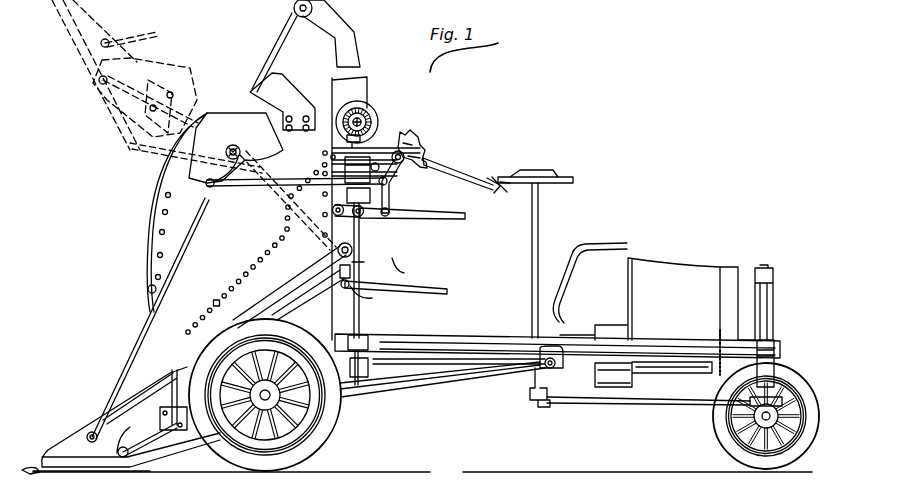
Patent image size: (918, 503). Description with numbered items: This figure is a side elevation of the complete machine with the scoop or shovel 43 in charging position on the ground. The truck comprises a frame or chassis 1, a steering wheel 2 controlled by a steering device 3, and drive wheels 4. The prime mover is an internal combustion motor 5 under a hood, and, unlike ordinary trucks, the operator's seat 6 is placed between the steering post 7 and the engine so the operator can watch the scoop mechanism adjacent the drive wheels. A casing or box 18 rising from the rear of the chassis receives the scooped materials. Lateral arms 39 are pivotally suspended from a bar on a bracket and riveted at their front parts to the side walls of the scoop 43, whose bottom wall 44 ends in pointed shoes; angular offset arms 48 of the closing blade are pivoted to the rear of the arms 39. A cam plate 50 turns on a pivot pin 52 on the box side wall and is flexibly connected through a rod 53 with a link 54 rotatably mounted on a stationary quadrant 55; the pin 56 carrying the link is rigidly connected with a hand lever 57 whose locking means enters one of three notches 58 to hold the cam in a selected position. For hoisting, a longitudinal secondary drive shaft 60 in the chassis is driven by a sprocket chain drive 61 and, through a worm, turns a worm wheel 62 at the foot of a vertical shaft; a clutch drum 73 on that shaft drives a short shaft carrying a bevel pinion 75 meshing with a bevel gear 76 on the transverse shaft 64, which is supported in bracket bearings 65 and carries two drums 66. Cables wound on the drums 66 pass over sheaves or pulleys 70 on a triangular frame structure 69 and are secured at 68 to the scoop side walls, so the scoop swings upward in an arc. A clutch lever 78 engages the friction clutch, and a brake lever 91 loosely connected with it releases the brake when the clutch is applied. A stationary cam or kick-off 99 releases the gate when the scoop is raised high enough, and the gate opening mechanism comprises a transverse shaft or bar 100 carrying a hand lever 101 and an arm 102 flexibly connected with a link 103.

The frame or chassis 1 is at (474, 335).
The steering wheel 2 is at (800, 378).
The steering device 3 is at (555, 393).
The drive wheels 4 is at (332, 443).
The internal combustion motor 5 is at (693, 372).
The operator's seat 6 is at (627, 246).
The steering post 7 is at (540, 220).
The casing or box 18 is at (143, 232).
The lateral arms 39 is at (296, 284).
The scoop or shovel 43 is at (113, 28).
The bottom wall 44 is at (35, 476).
The angular offset arms 48 is at (180, 367).
The cam plate 50 is at (191, 157).
The pivot pin 52 is at (234, 159).
The rod 53 is at (256, 184).
The link 54 is at (398, 175).
The quadrant 55 is at (424, 136).
The pin 56 is at (440, 161).
The hand lever 57 is at (498, 193).
The notches 58 is at (411, 131).
The secondary drive shaft 60 is at (640, 352).
The sprocket chain drive 61 is at (720, 360).
The worm wheel 62 is at (378, 345).
The transverse shaft 64 is at (370, 112).
The bracket bearings 65 is at (364, 263).
The drums 66 is at (368, 100).
The cable attachment 68 is at (118, 376).
The triangular frame structure 69 is at (358, 16).
The sheaves or pulleys 70 is at (303, 18).
The clutch drum 73 is at (363, 220).
The bevel pinion 75 is at (333, 140).
The bevel gear 76 is at (363, 120).
The clutch lever 78 is at (440, 221).
The brake lever 91 is at (392, 200).
The stationary cam or kick-off 99 is at (241, 117).
The transverse shaft or bar 100 is at (372, 298).
The hand lever 101 is at (430, 285).
The arm 102 is at (400, 270).
The link 103 is at (308, 290).